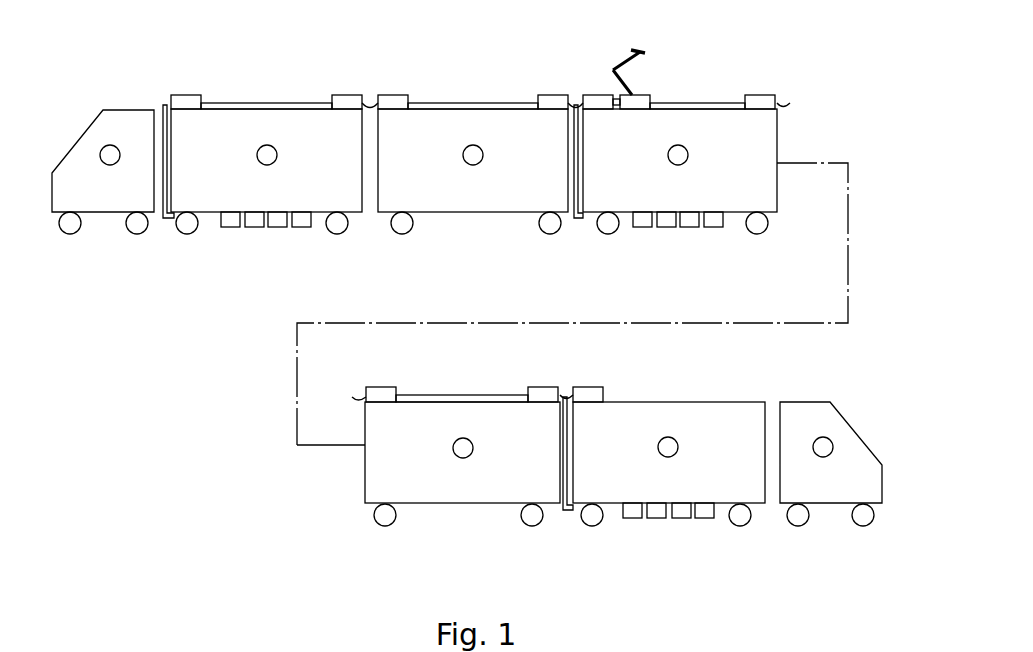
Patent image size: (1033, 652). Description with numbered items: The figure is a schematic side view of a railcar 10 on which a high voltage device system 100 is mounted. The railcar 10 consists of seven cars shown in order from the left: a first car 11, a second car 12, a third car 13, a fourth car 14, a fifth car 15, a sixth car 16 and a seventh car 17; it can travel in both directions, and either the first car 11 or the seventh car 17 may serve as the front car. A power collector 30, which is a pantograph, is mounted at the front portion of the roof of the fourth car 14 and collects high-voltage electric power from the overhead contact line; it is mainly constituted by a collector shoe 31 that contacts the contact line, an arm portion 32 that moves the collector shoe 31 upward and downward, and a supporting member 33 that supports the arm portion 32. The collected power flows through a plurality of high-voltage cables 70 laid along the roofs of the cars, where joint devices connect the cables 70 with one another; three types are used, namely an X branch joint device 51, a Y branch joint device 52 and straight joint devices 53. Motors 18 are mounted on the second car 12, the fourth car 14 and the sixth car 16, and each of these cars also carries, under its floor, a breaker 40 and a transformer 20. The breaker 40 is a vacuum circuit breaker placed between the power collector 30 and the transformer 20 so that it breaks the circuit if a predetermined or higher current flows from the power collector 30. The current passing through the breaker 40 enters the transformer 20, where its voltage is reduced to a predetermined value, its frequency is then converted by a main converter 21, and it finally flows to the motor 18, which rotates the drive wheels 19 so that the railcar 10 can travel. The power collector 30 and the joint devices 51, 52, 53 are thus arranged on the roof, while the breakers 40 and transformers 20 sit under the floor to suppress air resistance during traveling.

The high voltage device system 100 is at (520, 66).
The railcar 10 is at (87, 123).
The first car 11 is at (130, 122).
The second car 12 is at (290, 123).
The third car 13 is at (486, 123).
The fourth car 14 is at (712, 120).
The fifth car 15 is at (475, 417).
The sixth car 16 is at (666, 417).
The seventh car 17 is at (811, 415).
The motor 18 is at (301, 226).
The drive wheel 19 is at (188, 228).
The transformer 20 is at (253, 226).
The main converter 21 is at (278, 226).
The power collector 30 is at (692, 38).
The collector shoe 31 is at (638, 50).
The arm portion 32 is at (630, 64).
The supporting member 33 is at (647, 94).
The breaker 40 is at (228, 226).
The X branch joint device 51 is at (594, 103).
The Y branch joint device 52 is at (590, 395).
The straight joint device 53 is at (188, 103).
The high-voltage cable 70 is at (239, 106).